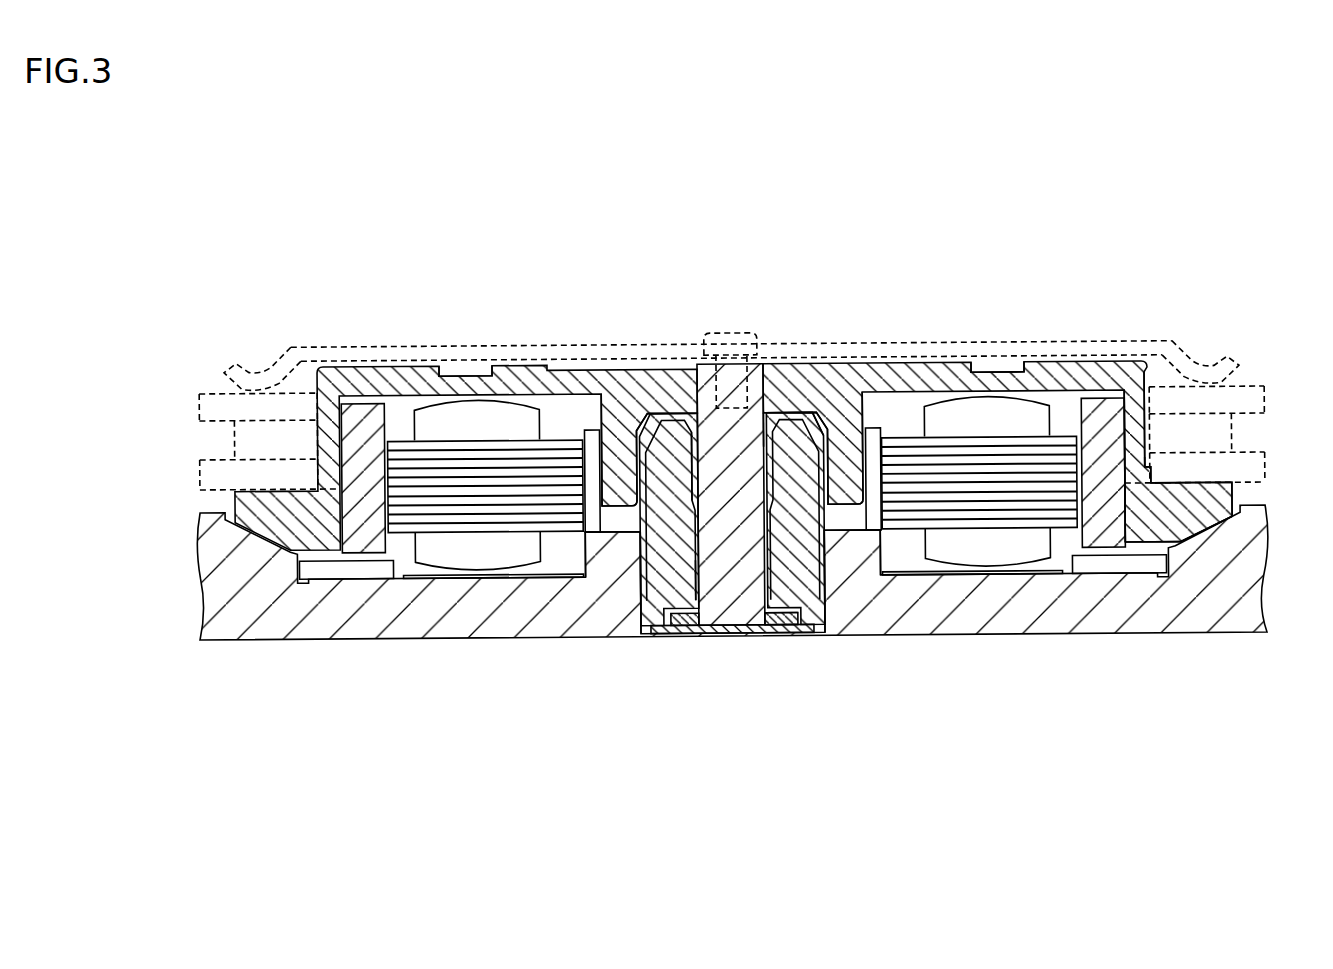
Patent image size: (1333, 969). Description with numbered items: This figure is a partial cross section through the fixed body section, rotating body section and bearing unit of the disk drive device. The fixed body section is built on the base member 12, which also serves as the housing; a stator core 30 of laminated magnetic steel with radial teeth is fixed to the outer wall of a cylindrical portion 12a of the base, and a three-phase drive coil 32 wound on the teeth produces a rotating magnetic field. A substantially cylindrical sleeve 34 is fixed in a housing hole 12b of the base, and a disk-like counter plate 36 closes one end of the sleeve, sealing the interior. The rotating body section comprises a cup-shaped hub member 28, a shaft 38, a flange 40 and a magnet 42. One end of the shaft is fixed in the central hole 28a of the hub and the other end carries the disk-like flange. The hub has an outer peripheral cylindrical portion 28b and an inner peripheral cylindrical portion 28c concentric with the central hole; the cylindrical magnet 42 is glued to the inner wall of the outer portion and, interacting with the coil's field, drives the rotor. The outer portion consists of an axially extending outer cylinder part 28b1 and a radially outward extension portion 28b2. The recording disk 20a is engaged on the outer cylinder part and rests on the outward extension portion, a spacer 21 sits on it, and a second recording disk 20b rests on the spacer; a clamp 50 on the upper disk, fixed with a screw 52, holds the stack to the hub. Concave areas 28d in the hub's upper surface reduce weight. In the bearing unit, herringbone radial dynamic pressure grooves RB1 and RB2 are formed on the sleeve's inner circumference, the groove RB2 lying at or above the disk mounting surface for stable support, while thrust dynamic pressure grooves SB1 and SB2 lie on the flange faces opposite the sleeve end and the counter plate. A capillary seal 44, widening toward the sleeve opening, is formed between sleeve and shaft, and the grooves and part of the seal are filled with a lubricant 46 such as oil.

The base member 12 is at (983, 614).
The cylindrical portion 12a is at (600, 524).
The housing hole 12b is at (800, 575).
The recording disk 20a is at (1245, 476).
The recording disk 20b is at (1253, 402).
The spacer 21 is at (1217, 439).
The hub member 28 is at (945, 380).
The central hole 28a is at (752, 382).
The outer peripheral cylindrical portion 28b is at (1140, 413).
The outer cylinder part 28b1 is at (1146, 435).
The outward extension portion 28b2 is at (1178, 513).
The inner peripheral cylindrical portion 28c is at (620, 426).
The concave area 28d is at (453, 368).
The stator core 30 is at (732, 558).
The drive coil 32 is at (488, 546).
The sleeve 34 is at (665, 575).
The counter plate 36 is at (768, 635).
The shaft 38 is at (723, 427).
The flange 40 is at (700, 628).
The magnet 42 is at (360, 417).
The capillary seal 44 is at (767, 420).
The lubricant 46 is at (800, 440).
The clamp 50 is at (318, 349).
The screw 52 is at (740, 332).
The radial dynamic pressure groove RB1 is at (693, 588).
The radial dynamic pressure groove RB2 is at (688, 472).
The thrust dynamic pressure groove SB1 is at (815, 609).
The thrust dynamic pressure groove SB2 is at (783, 623).